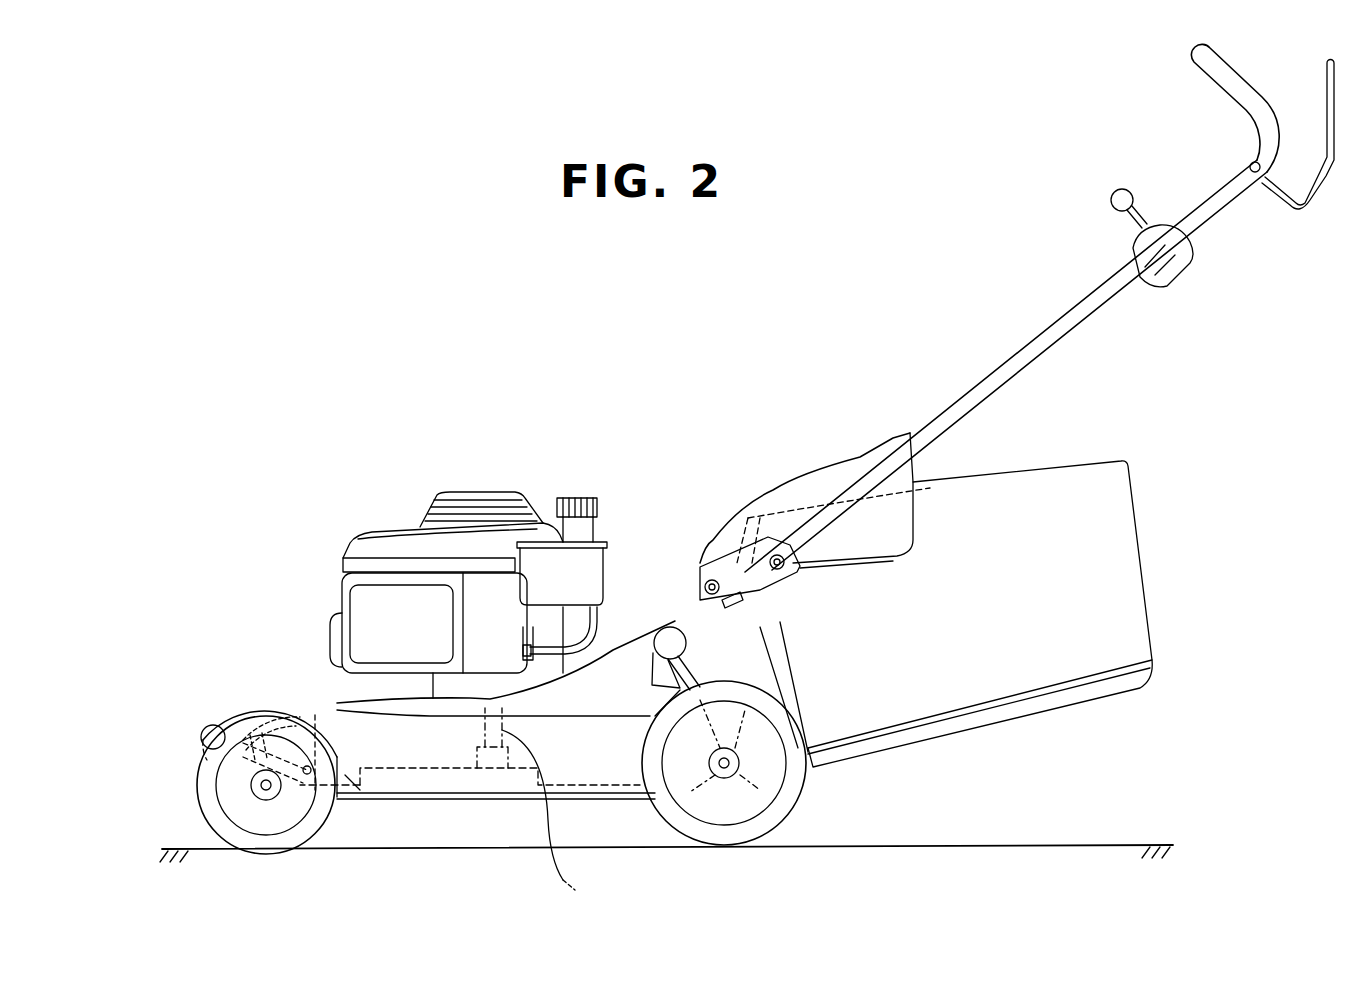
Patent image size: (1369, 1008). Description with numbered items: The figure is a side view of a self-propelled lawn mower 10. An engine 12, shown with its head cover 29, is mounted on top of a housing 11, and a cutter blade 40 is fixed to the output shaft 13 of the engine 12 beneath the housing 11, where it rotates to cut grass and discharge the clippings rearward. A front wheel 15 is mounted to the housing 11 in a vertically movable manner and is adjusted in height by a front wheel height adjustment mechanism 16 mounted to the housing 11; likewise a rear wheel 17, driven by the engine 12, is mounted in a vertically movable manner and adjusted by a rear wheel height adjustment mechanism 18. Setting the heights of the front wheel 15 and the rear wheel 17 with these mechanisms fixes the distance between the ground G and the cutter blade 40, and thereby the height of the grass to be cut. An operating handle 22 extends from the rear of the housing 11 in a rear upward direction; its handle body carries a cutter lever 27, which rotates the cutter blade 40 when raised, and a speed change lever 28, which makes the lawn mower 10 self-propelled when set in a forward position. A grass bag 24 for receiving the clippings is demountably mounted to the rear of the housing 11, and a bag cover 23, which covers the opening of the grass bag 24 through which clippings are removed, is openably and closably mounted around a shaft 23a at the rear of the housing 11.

The lawn mower 10 is at (435, 385).
The housing 11 is at (330, 697).
The engine 12 is at (436, 553).
The output shaft 13 is at (470, 808).
The front wheel 15 is at (240, 713).
The front wheel height adjustment mechanism 16 is at (325, 758).
The rear wheel 17 is at (798, 810).
The rear wheel height adjustment mechanism 18 is at (775, 705).
The operating handle 22 is at (1039, 398).
The bag cover 23 is at (790, 475).
The shaft 23a is at (697, 570).
The grass bag 24 is at (1135, 512).
The cutter lever 27 is at (1317, 197).
The speed change lever 28 is at (1123, 190).
The head cover 29 is at (383, 533).
The cutter blade 40 is at (397, 787).
The ground G is at (1123, 843).